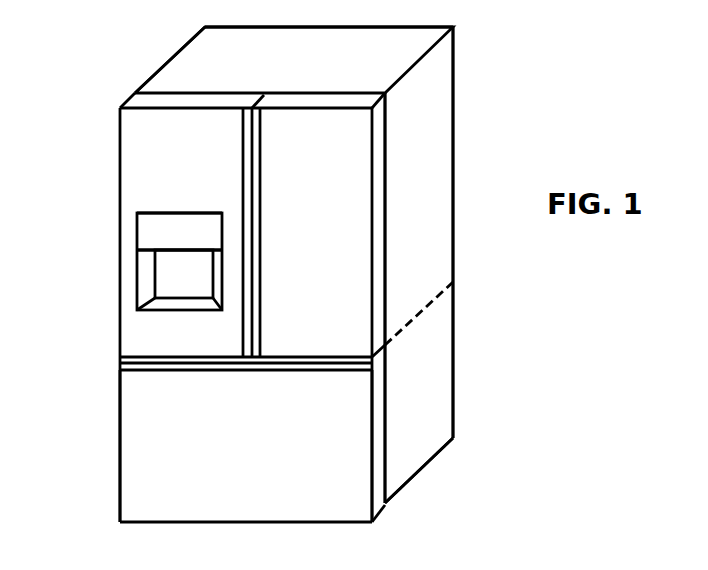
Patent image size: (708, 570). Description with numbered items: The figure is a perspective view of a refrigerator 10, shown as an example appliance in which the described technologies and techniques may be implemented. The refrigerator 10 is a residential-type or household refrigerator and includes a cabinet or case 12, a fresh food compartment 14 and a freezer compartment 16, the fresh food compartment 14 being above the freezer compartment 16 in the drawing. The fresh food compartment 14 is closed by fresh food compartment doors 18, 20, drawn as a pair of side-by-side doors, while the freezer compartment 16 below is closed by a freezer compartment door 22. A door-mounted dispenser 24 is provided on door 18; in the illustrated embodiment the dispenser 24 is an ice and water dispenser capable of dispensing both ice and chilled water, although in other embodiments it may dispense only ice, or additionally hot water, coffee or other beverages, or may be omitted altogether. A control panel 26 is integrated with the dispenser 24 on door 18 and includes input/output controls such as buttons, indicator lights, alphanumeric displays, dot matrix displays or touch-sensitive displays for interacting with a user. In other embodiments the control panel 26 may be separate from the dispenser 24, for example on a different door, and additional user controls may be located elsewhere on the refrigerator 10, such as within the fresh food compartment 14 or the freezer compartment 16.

The refrigerator 10 is at (96, 79).
The cabinet 12 is at (185, 48).
The fresh food compartment 14 is at (430, 131).
The freezer compartment 16 is at (427, 374).
The fresh food compartment door 18 is at (118, 183).
The fresh food compartment door 20 is at (277, 98).
The freezer compartment door 22 is at (118, 467).
The door-mounted dispenser 24 is at (136, 275).
The control panel 26 is at (210, 215).